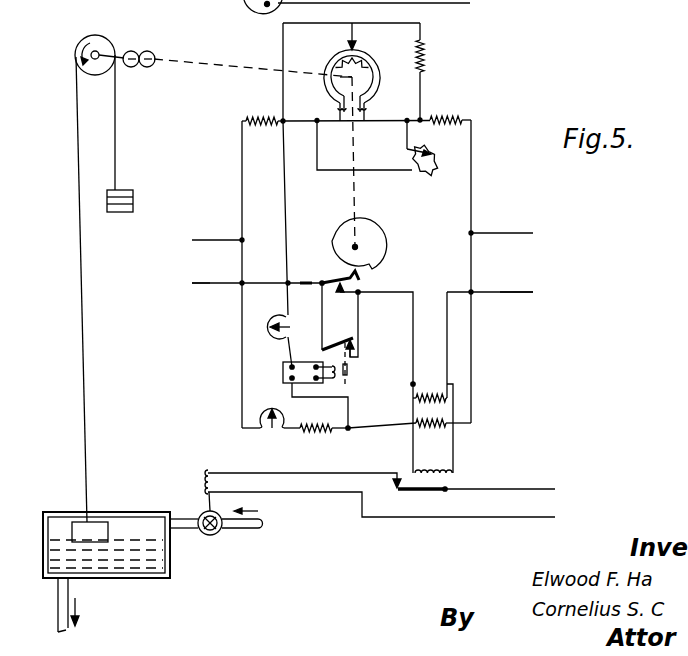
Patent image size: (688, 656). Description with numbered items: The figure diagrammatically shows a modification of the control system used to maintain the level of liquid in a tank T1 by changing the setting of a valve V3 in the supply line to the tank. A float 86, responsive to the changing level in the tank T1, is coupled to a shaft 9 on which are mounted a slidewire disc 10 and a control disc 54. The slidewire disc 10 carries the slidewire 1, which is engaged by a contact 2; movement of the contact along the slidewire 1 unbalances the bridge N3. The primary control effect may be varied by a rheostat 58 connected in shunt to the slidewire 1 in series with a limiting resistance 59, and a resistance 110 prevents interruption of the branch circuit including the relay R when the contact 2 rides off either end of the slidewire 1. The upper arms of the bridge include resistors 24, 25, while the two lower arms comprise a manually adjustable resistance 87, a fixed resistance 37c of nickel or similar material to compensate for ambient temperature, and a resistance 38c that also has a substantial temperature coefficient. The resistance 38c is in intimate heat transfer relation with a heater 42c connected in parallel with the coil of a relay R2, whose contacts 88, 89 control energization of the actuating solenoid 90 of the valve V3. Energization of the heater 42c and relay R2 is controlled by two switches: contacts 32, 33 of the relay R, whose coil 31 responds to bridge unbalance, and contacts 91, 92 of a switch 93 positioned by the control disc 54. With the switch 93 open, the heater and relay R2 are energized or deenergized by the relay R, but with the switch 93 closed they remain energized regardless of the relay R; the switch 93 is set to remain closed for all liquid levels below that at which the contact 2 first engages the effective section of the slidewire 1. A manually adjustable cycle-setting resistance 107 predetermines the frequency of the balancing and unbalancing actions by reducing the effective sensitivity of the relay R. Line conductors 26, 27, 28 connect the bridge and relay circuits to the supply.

The slidewire 1 is at (362, 63).
The contact 2 is at (355, 46).
The shaft 9 is at (197, 68).
The slidewire disc 10 is at (380, 89).
The resistor 24 is at (253, 127).
The resistor 25 is at (447, 116).
The line conductor 26 is at (241, 240).
The line conductor 27 is at (476, 233).
The line conductor 28 is at (207, 278).
The relay coil 31 is at (331, 375).
The contact of relay R 32 is at (343, 342).
The contact of relay R 33 is at (354, 351).
The fixed resistance 37c is at (305, 426).
The resistance 38c is at (431, 427).
The heater 42c is at (418, 396).
The control disc 54 is at (369, 238).
The rheostat 58 is at (430, 173).
The limiting resistance 59 is at (414, 162).
The float 86 is at (97, 531).
The manually adjustable resistance 87 is at (272, 410).
The contact of relay R2 88 is at (416, 491).
The contact of relay R2 89 is at (394, 477).
The actuating solenoid 90 is at (204, 483).
The contact of switch 93 91 is at (350, 291).
The contact of switch 93 92 is at (340, 274).
The switch 93 is at (302, 274).
The cycle-setting resistance 107 is at (272, 317).
The resistance 110 is at (424, 50).
The bridge N3 is at (217, 203).
The relay R is at (286, 371).
The relay R2 is at (492, 479).
The tank T1 is at (171, 556).
The valve V3 is at (222, 531).